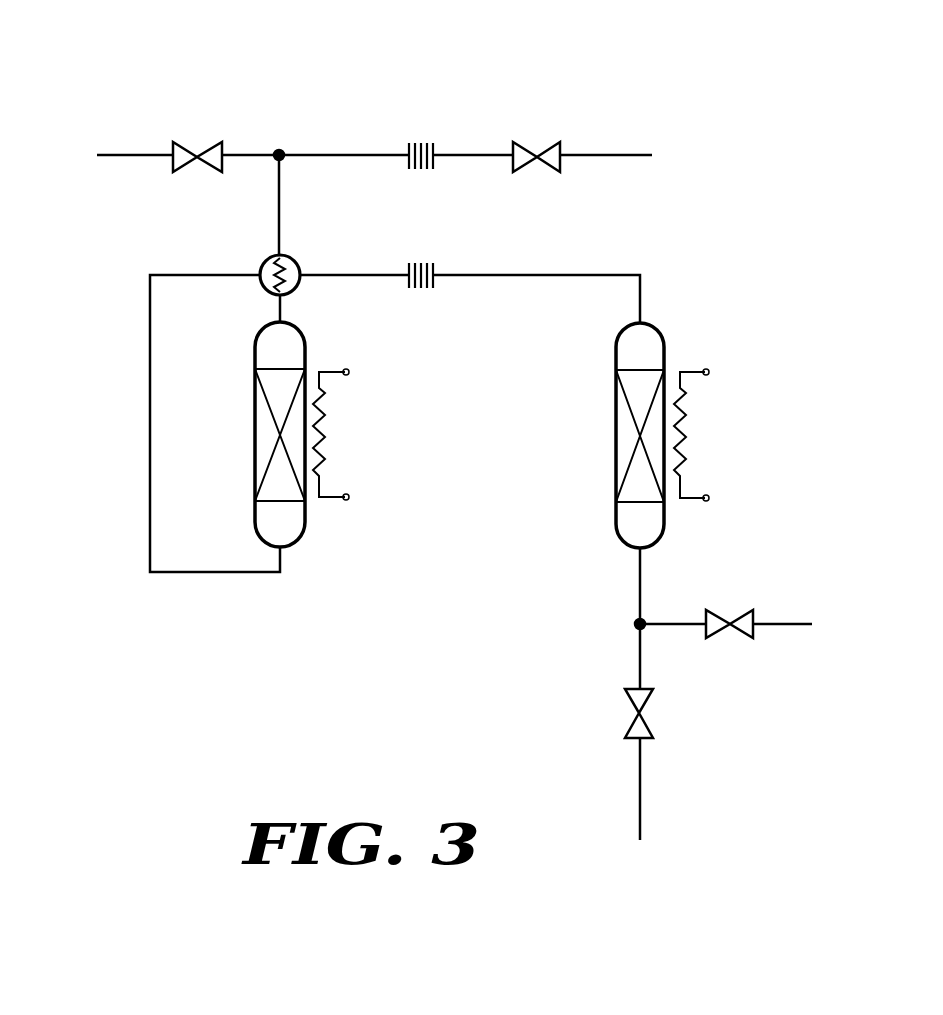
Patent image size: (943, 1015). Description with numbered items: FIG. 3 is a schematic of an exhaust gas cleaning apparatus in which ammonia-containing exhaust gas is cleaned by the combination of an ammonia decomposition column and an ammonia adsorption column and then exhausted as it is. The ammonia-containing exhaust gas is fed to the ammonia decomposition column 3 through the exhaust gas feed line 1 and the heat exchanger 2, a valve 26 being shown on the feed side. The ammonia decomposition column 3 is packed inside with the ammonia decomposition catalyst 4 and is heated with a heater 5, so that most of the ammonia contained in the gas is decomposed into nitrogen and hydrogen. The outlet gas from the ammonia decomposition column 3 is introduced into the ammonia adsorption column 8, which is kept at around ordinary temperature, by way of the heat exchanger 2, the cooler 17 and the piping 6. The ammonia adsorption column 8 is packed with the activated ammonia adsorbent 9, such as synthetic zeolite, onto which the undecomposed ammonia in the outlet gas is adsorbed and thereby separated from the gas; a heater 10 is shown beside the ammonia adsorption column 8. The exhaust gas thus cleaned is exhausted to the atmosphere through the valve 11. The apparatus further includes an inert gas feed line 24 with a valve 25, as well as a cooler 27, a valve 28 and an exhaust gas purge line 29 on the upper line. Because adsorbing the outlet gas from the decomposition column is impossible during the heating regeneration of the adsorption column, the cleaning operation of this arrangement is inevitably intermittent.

The exhaust gas feed line 1 is at (125, 155).
The heat exchanger 2 is at (267, 263).
The ammonia decomposition column 3 is at (273, 343).
The ammonia decomposition catalyst 4 is at (263, 420).
The heater 5 is at (323, 412).
The piping 6 is at (172, 572).
The ammonia adsorption column 8 is at (627, 358).
The ammonia adsorbent 9 is at (622, 433).
The heater 10 is at (683, 437).
The valve 11 is at (635, 713).
The cooler 17 is at (418, 265).
The inert gas feed line 24 is at (780, 624).
The valve 25 is at (742, 613).
The valve 26 is at (207, 148).
The cooler 27 is at (422, 145).
The valve 28 is at (545, 148).
The exhaust gas purge line 29 is at (602, 156).